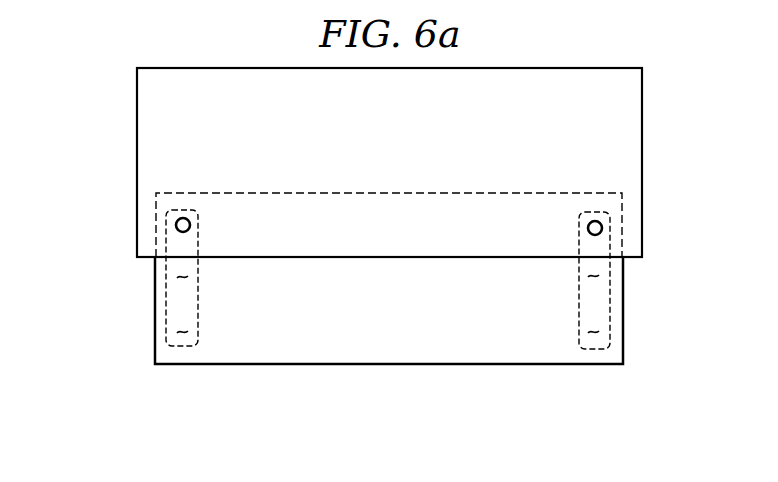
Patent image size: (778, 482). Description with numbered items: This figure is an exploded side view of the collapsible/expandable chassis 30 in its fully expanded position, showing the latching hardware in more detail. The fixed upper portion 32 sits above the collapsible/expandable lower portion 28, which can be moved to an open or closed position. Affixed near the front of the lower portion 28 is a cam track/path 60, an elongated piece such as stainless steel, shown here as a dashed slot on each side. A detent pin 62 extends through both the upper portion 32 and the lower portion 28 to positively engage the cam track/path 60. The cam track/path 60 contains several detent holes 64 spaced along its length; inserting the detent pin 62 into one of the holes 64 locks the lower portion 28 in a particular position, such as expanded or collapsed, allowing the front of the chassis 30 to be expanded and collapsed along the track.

The expandable chassis 30 is at (107, 207).
The upper portion 32 is at (643, 176).
The lower portion 28 is at (625, 312).
The cam track/path 60 is at (199, 245).
The detent pin 62 is at (183, 218).
The detent holes 64 is at (189, 277).